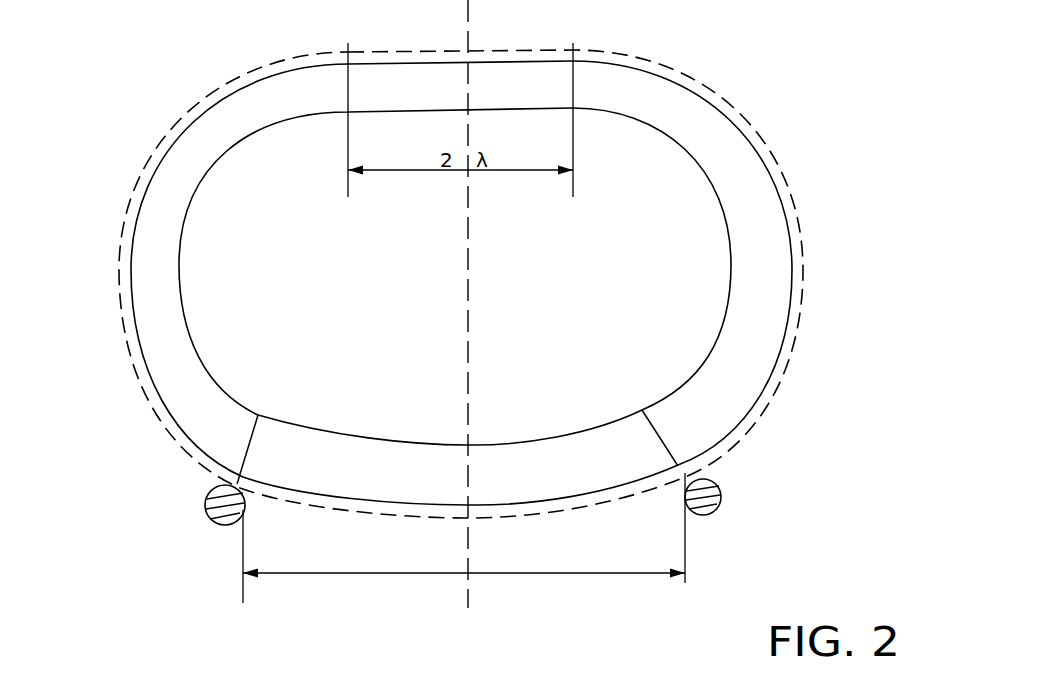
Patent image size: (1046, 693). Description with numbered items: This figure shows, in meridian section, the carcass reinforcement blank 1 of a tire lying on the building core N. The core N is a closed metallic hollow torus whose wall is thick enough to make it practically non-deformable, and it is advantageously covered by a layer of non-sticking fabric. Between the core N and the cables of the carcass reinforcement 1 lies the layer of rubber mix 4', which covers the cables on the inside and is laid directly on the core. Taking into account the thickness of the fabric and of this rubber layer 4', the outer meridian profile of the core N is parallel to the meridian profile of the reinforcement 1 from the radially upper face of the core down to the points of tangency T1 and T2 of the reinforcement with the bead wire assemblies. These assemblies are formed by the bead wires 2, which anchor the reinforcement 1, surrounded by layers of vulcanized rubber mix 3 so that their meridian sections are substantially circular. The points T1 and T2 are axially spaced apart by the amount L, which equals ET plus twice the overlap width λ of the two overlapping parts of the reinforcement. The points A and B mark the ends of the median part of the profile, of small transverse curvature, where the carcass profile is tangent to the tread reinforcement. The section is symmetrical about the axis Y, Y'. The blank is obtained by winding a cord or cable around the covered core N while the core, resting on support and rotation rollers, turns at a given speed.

The carcass reinforcement 1 is at (801, 269).
The bead wires 2 is at (722, 507).
The layers of vulcanized rubber mix 3 is at (707, 484).
The layer of rubber mix 4' is at (377, 329).
The point of tangency A is at (247, 71).
The point of tangency B is at (676, 74).
The core N is at (747, 212).
The point of tangency T1 is at (262, 429).
The point of tangency T2 is at (640, 415).
The axial spacing L is at (464, 538).
The axis of symmetry end Y is at (487, 23).
The axis of symmetry end Y' is at (494, 601).